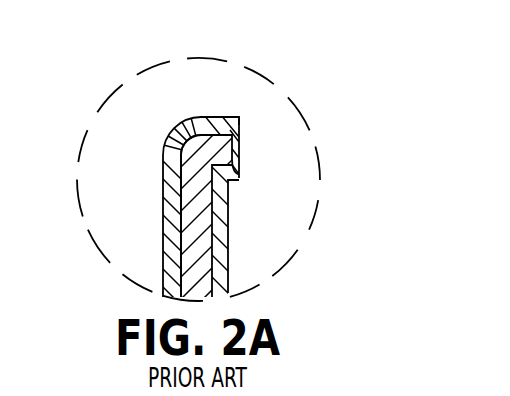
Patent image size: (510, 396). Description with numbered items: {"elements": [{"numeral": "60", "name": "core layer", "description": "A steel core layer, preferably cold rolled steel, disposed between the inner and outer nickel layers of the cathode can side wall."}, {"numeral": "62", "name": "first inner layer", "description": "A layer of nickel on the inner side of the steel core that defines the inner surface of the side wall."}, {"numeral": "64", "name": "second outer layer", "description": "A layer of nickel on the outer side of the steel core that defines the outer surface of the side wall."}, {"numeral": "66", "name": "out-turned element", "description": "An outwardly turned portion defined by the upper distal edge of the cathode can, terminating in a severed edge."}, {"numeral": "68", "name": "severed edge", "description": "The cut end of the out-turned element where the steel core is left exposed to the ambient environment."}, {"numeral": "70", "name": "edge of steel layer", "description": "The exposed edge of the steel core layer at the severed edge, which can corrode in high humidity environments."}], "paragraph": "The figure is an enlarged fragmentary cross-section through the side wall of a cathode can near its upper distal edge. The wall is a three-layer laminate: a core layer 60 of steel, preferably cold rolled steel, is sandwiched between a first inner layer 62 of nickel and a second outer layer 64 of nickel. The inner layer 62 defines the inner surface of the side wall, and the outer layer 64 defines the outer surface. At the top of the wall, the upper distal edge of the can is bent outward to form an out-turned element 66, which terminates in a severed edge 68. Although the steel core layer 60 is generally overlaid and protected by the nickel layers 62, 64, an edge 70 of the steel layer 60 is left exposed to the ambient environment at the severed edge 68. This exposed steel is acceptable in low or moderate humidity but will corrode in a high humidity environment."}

The seal case / rigid ring 60 is at (202, 228).
The elastomer body 62 is at (222, 212).
The inner seal layer 64 is at (218, 268).
The outer elastomer layer 66 is at (203, 118).
The corner edge 68 is at (241, 122).
The seal lip 70 is at (240, 157).